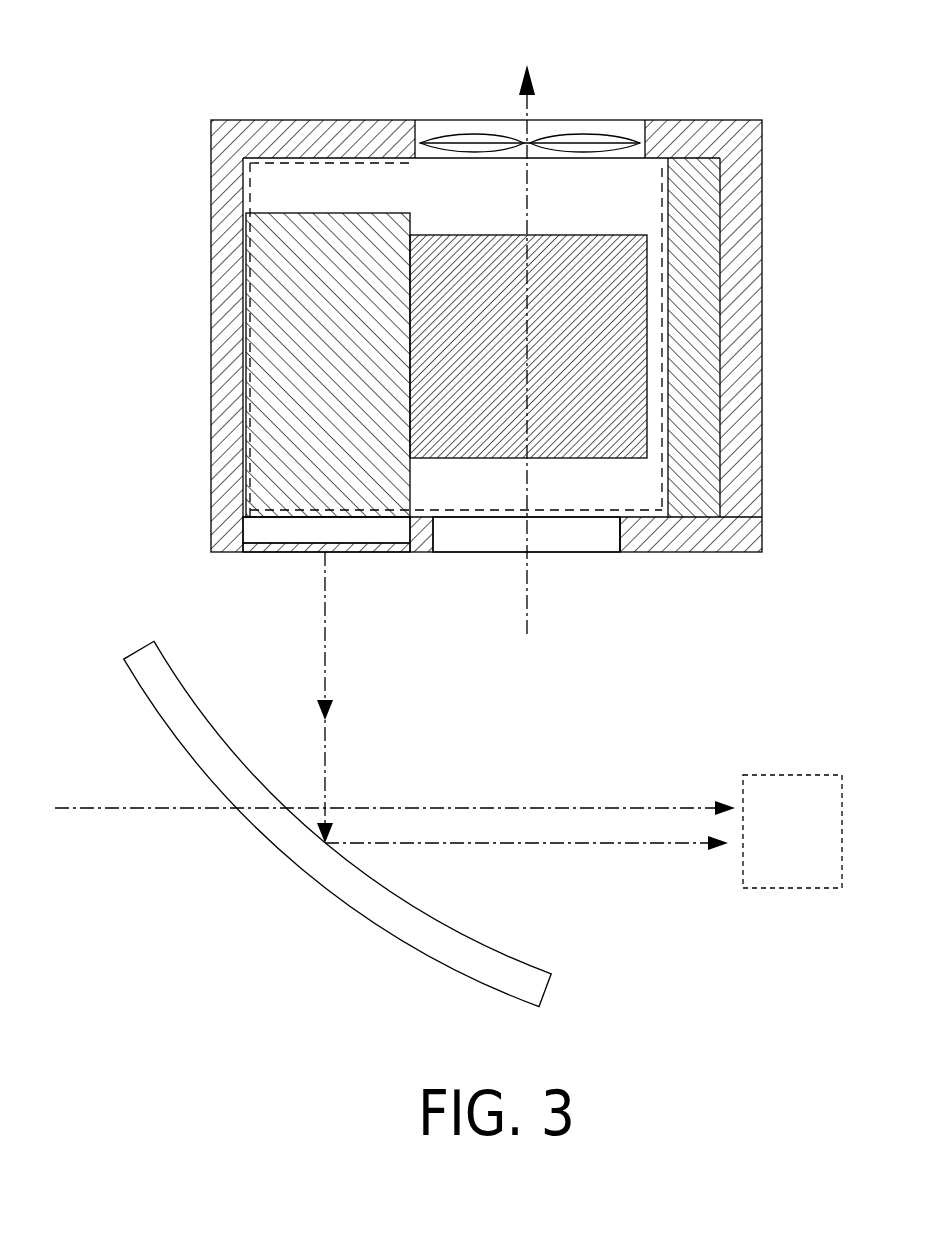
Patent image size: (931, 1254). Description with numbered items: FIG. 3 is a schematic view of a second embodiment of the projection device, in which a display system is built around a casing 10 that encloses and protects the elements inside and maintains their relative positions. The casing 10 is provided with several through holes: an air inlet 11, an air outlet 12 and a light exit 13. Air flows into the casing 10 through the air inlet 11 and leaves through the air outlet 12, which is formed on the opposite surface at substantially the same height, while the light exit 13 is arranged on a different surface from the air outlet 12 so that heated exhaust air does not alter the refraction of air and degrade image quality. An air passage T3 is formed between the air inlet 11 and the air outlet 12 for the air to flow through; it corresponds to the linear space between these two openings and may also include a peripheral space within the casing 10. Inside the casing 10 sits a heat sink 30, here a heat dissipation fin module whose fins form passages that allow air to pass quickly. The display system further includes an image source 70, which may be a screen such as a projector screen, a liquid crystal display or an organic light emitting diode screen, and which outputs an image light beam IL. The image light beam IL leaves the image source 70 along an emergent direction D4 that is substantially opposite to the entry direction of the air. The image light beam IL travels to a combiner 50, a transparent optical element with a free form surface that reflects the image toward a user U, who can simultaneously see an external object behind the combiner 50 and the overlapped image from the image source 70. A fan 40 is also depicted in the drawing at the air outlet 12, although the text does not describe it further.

The casing 10 is at (211, 440).
The air inlet 11 is at (497, 553).
The air outlet 12 is at (417, 163).
The light exit 13 is at (305, 555).
The heat sink 30 is at (495, 422).
The fan 40 is at (497, 120).
The combiner 50 is at (353, 912).
The image source 70 is at (245, 553).
The image light beam IL is at (327, 600).
The emergent direction D4 is at (333, 702).
The air passage T3 is at (613, 518).
The user U is at (797, 775).